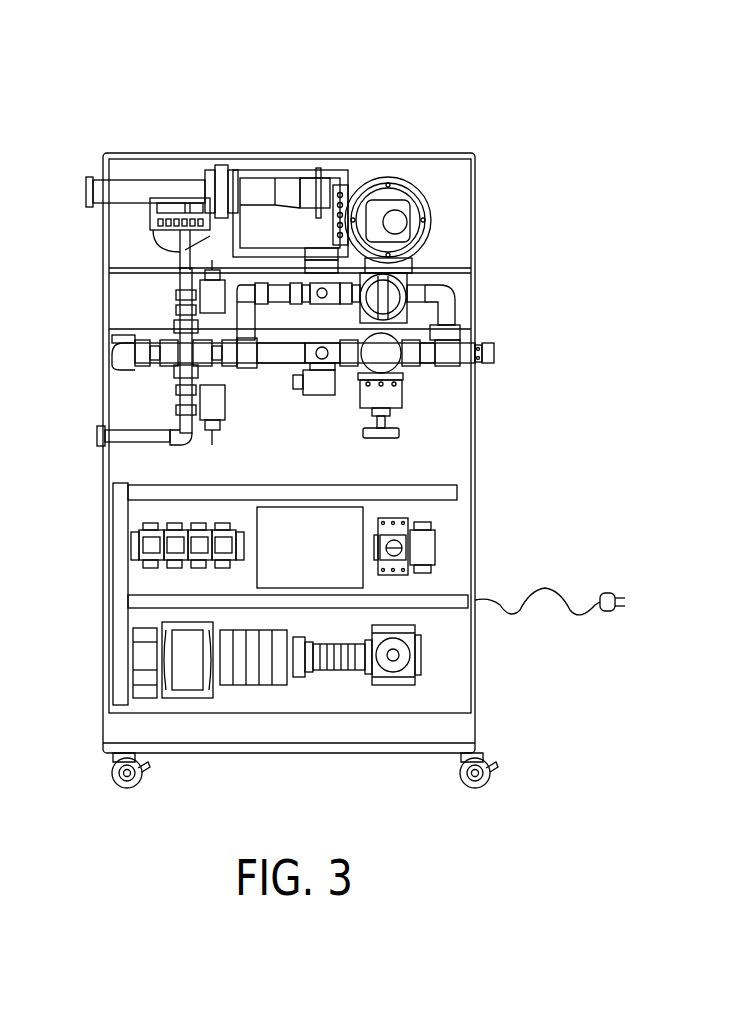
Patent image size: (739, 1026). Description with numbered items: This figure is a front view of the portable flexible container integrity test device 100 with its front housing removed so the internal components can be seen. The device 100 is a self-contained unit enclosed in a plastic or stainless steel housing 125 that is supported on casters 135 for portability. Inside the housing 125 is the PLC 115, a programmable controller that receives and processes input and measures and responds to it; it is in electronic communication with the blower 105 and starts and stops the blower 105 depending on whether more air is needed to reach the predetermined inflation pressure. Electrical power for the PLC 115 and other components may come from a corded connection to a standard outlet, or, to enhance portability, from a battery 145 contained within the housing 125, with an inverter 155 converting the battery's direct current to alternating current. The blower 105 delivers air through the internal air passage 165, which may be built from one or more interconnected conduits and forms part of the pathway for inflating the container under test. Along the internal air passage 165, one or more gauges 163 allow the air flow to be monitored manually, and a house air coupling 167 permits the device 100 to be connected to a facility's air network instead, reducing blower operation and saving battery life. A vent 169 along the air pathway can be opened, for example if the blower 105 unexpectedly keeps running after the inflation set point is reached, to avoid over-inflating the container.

The portable flexible container integrity test device 100 is at (170, 68).
The blower 105 is at (420, 200).
The PLC 115 is at (148, 548).
The housing 125 is at (475, 378).
The casters 135 is at (112, 782).
The battery 145 is at (340, 520).
The inverter 155 is at (435, 572).
The gauges 163 is at (402, 385).
The internal air passage 165 is at (95, 180).
The house air coupling 167 is at (478, 345).
The vent 169 is at (112, 337).